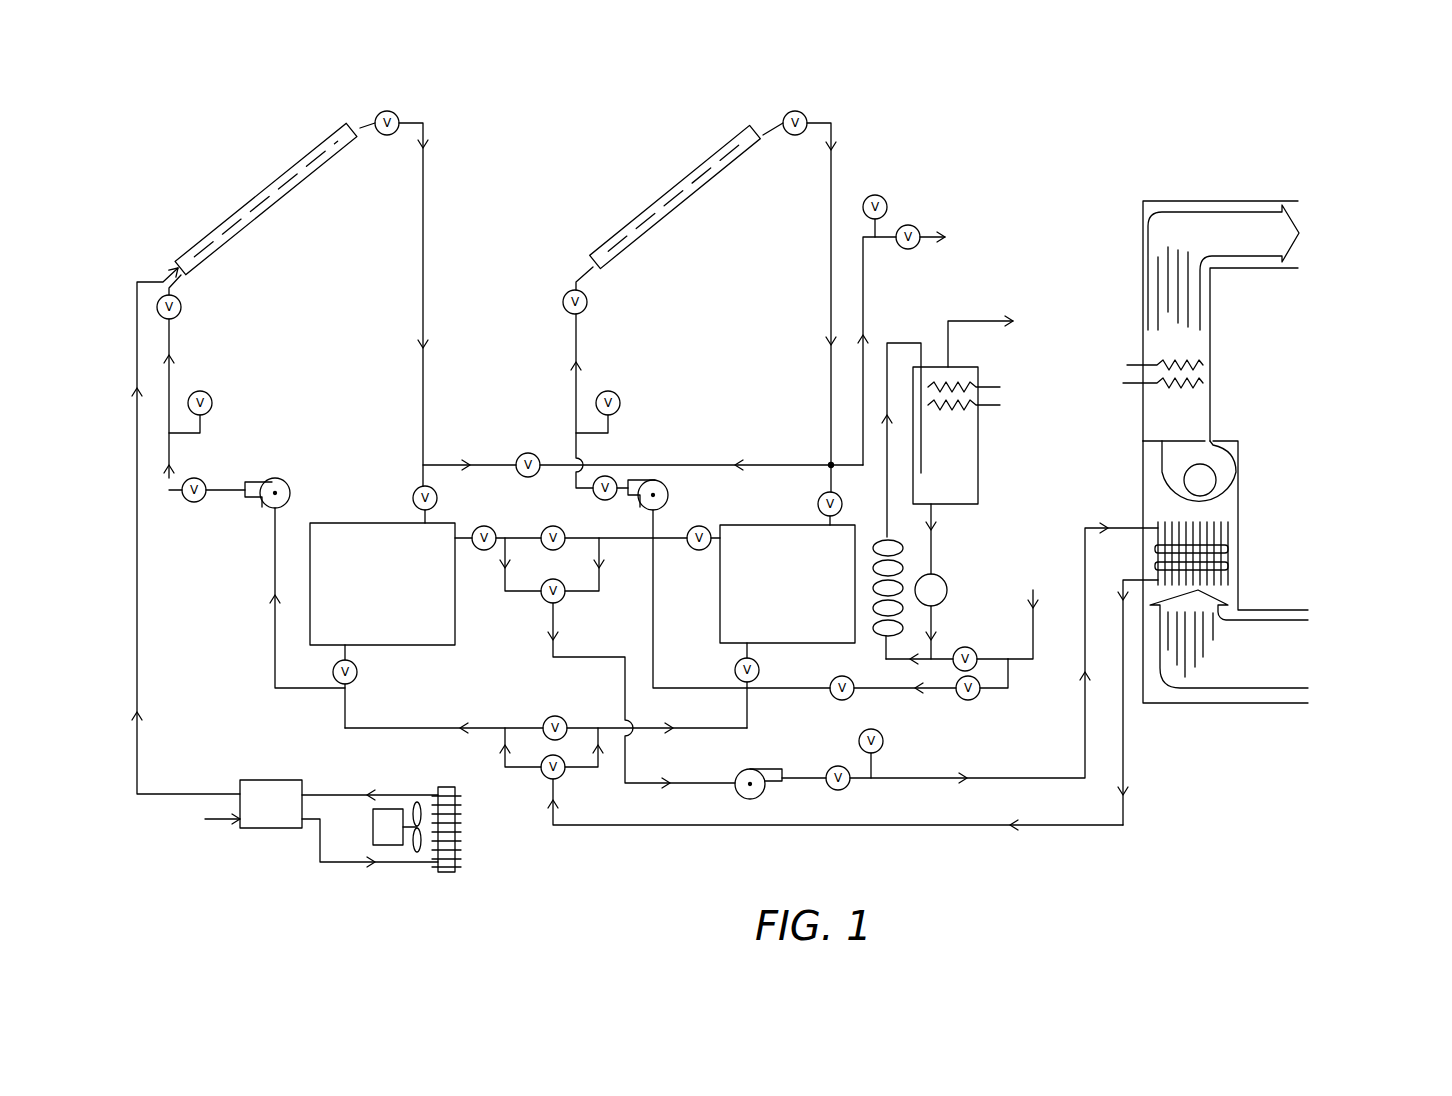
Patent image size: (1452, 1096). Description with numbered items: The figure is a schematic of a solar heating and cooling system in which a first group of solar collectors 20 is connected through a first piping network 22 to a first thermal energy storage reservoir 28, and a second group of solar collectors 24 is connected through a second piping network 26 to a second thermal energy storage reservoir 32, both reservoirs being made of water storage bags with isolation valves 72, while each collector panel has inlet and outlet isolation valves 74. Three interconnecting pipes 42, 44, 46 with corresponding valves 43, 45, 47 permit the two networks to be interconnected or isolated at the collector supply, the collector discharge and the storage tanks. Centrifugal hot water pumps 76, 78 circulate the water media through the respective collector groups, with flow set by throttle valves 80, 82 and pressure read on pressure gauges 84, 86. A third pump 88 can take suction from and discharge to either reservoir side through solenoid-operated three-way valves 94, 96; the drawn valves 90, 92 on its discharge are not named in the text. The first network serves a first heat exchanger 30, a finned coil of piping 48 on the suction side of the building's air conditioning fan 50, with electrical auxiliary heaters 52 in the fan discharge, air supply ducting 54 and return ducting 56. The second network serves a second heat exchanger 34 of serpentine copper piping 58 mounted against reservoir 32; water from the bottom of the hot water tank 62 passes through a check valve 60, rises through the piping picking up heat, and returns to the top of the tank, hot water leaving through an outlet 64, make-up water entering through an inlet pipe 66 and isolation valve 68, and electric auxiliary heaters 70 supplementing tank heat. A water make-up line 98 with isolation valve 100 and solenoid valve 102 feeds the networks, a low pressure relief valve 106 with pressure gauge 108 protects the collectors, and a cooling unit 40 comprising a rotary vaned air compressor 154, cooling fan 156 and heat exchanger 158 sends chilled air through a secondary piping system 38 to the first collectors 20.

The first group of solar collectors 20 is at (228, 214).
The first piping network 22 is at (428, 253).
The second group of solar collectors 24 is at (640, 207).
The second piping network 26 is at (570, 352).
The first thermal energy storage reservoir 28 is at (457, 624).
The first heat exchanger 30 is at (1242, 575).
The second thermal energy storage reservoir 32 is at (718, 624).
The second heat exchanger 34 is at (905, 553).
The secondary piping system 38 is at (138, 535).
The cooling unit 40 is at (335, 866).
The interconnecting pipe 42 is at (513, 727).
The interconnecting valve 43 is at (560, 716).
The interconnecting pipe 44 is at (483, 462).
The interconnecting valve 45 is at (537, 456).
The interconnecting pipe 46 is at (520, 538).
The interconnecting valve 47 is at (558, 526).
The finned coil of piping 48 is at (1228, 517).
The air conditioning fan 50 is at (1212, 447).
The electrical auxiliary heaters 52 is at (1195, 358).
The air supply ducting 54 is at (1217, 200).
The air conditioning return ducting 56 is at (1287, 707).
The copper piping 58 is at (888, 618).
The check valve 60 is at (945, 577).
The hot water tank 62 is at (1005, 435).
The outlet 64 is at (950, 332).
The inlet pipe 66 is at (1056, 620).
The isolation valve 68 is at (969, 647).
The electric auxiliary heaters 70 is at (988, 405).
The isolation valves 72 is at (413, 497).
The inlet and outlet isolation valves 74 is at (384, 110).
The centrifugal hot water pump 76 is at (270, 475).
The centrifugal hot water pump 78 is at (657, 478).
The throttle valve 80 is at (198, 480).
The throttle valve 82 is at (603, 477).
The pressure gauge 84 is at (202, 388).
The pressure gauge 86 is at (618, 395).
The third pump 88 is at (750, 768).
The valve 90 is at (838, 766).
The valve 92 is at (877, 730).
The three-way valve 94 is at (558, 600).
The three-way valve 96 is at (566, 774).
The water make-up line 98 is at (1012, 668).
The isolation valve 100 is at (976, 700).
The solenoid-operated isolation valve 102 is at (850, 698).
The low pressure relief valve 106 is at (917, 247).
The pressure gauge 108 is at (878, 195).
The rotary vaned air compressor 154 is at (295, 780).
The cooling fan 156 is at (394, 846).
The heat exchanger 158 is at (497, 762).